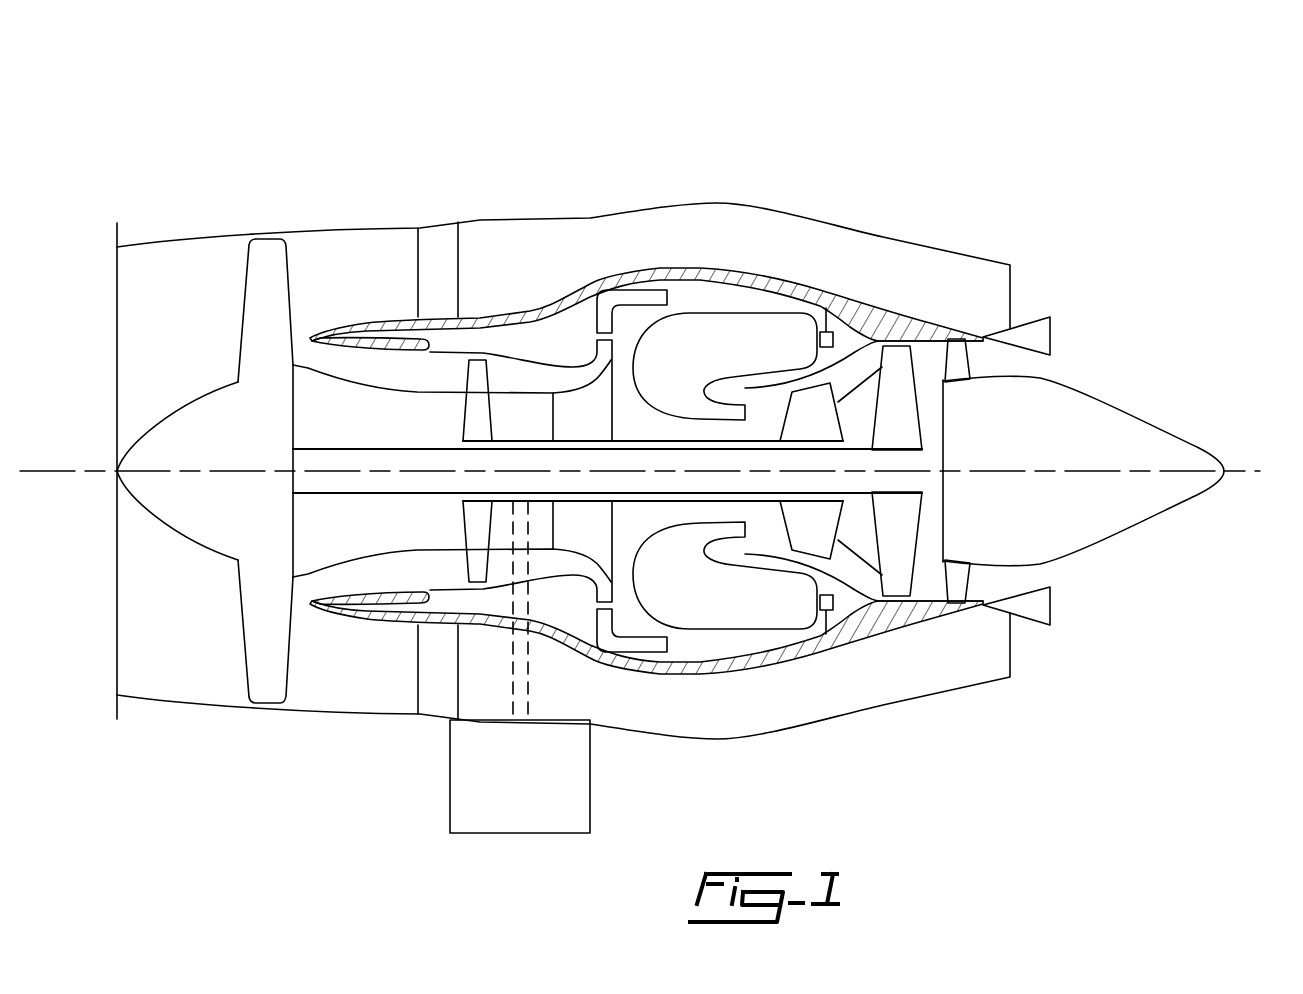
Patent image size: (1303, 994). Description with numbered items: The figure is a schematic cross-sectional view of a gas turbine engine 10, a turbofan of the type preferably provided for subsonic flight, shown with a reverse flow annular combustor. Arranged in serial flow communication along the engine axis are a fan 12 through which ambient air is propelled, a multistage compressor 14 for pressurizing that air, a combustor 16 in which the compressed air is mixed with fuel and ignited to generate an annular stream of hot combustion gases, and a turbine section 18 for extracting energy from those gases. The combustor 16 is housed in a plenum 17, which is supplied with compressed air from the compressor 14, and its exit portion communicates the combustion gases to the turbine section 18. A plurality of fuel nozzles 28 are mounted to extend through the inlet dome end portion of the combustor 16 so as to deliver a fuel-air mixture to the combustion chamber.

The gas turbine engine 10 is at (640, 425).
The fan 12 is at (262, 622).
The multistage compressor 14 is at (535, 383).
The combustor 16 is at (724, 337).
The plenum 17 is at (757, 300).
The turbine section 18 is at (855, 535).
The fuel nozzles 28 is at (826, 308).